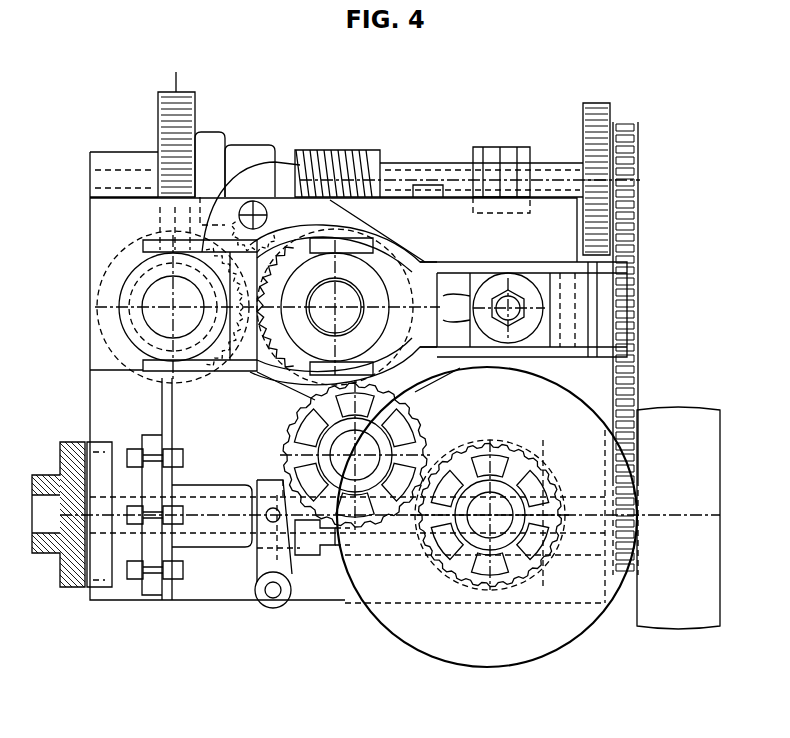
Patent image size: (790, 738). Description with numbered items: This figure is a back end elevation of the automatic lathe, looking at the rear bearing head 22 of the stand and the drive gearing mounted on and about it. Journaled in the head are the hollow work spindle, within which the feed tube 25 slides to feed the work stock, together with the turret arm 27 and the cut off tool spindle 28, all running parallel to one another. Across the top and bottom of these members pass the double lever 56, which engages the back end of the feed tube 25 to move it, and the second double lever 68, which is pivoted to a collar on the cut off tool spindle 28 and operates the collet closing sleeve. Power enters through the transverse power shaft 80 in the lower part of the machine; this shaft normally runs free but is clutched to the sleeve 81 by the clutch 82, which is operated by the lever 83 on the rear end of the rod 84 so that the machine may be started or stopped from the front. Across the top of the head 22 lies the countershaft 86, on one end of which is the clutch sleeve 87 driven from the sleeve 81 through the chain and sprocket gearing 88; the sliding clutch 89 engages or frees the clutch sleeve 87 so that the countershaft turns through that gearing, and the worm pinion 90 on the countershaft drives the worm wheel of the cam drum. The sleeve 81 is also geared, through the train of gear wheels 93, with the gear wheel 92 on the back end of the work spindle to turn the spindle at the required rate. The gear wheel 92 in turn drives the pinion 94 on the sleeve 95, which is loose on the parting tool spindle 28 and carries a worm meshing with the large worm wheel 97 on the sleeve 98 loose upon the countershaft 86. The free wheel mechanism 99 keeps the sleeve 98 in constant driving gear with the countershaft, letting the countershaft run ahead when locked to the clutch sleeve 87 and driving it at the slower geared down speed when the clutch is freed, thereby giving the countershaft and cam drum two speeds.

The bearing head 22 is at (332, 376).
The feed tube 25 is at (351, 306).
The turret arm 27 is at (540, 311).
The cut off tool spindle 28 is at (150, 316).
The double lever 56 is at (486, 264).
The second double lever 68 is at (287, 388).
The power shaft 80 is at (715, 514).
The sleeve 81 is at (395, 557).
The clutch 82 is at (329, 545).
The lever 83 is at (293, 572).
The rod 84 is at (262, 598).
The countershaft 86 is at (412, 163).
The clutch sleeve 87 is at (548, 175).
The chain and sprocket gearing 88 is at (625, 172).
The sliding clutch 89 is at (490, 160).
The worm pinion 90 is at (333, 152).
The gear wheel 92 is at (278, 338).
The train of gear wheels 93 is at (495, 636).
The pinion 94 is at (96, 303).
The sleeve 95 is at (125, 283).
The worm wheel 97 is at (149, 109).
The sleeve 98 is at (205, 132).
The free wheel mechanism 99 is at (250, 145).